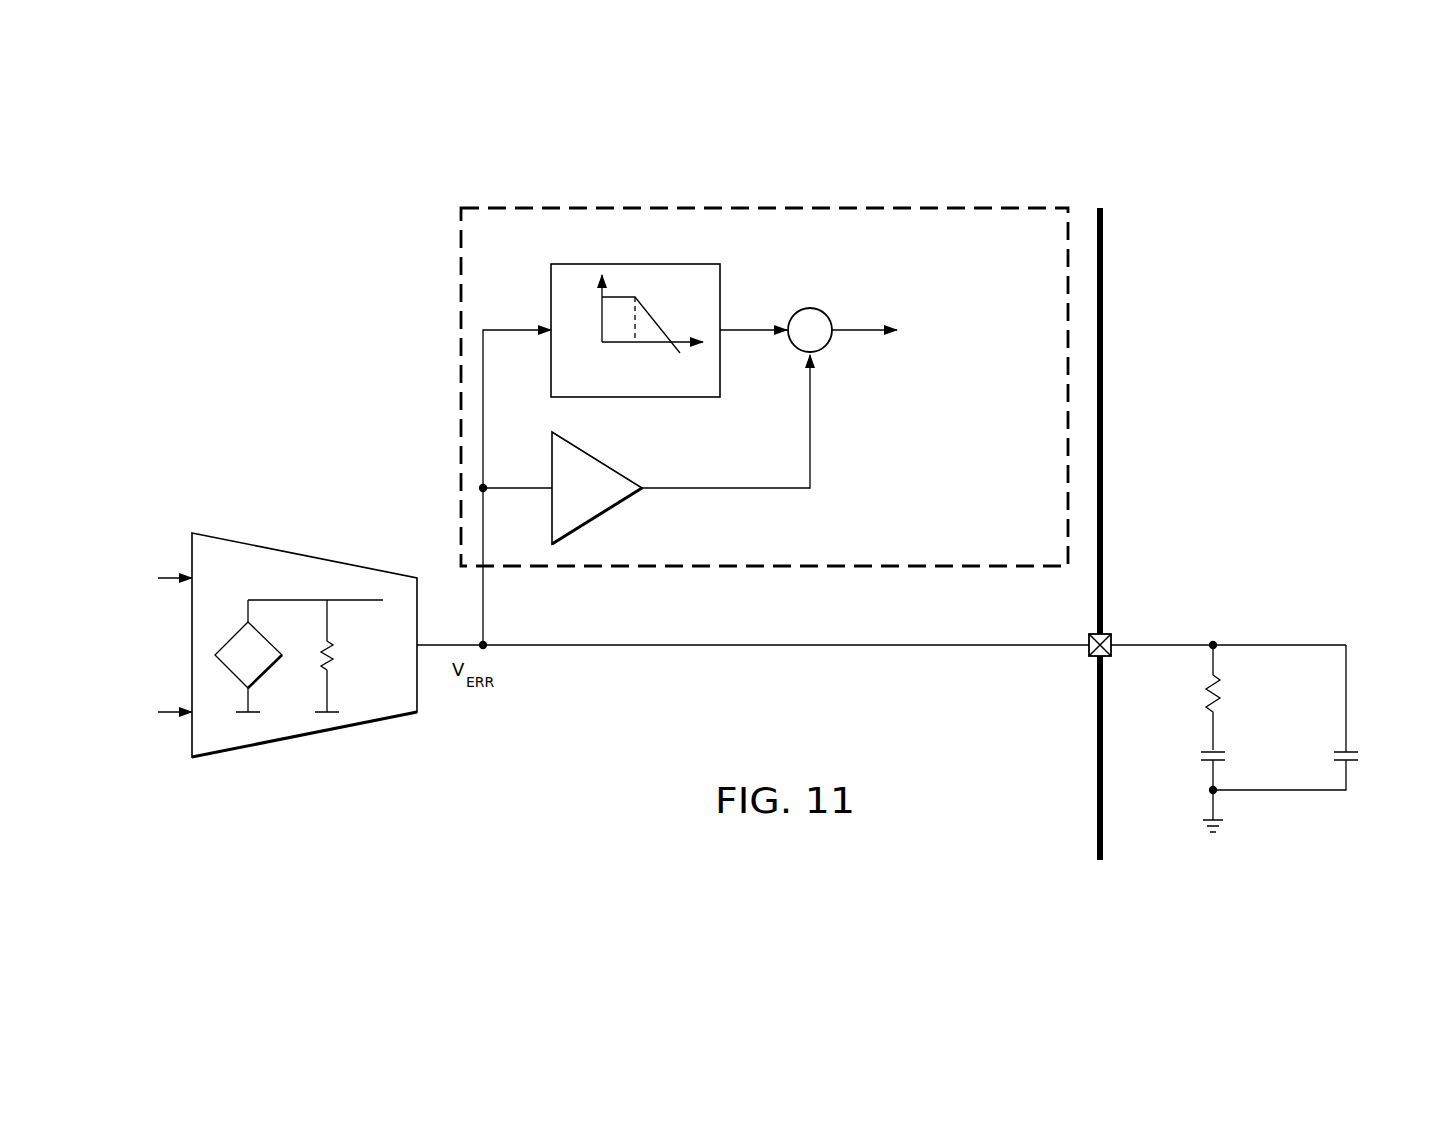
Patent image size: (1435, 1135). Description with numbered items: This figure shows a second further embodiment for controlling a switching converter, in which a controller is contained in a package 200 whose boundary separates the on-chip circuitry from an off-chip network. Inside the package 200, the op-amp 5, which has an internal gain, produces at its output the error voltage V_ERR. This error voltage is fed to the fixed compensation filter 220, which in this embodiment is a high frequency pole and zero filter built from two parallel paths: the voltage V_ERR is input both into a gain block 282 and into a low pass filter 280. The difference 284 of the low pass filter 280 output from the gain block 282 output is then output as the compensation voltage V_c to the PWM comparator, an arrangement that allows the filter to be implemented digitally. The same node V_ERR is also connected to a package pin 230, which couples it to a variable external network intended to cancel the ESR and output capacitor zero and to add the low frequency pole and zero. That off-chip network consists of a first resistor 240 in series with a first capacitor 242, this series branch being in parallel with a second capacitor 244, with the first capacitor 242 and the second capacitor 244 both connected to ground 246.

The op-amp 5 is at (302, 735).
The package 200 is at (1228, 372).
The fixed compensation filter 220 is at (600, 207).
The low pass filter 280 is at (551, 297).
The gain block 282 is at (600, 462).
The difference 284 is at (795, 311).
The package pin 230 is at (1113, 635).
The first resistor 240 is at (1200, 695).
The first capacitor 242 is at (1200, 757).
The second capacitor 244 is at (1360, 757).
The ground 246 is at (1200, 822).